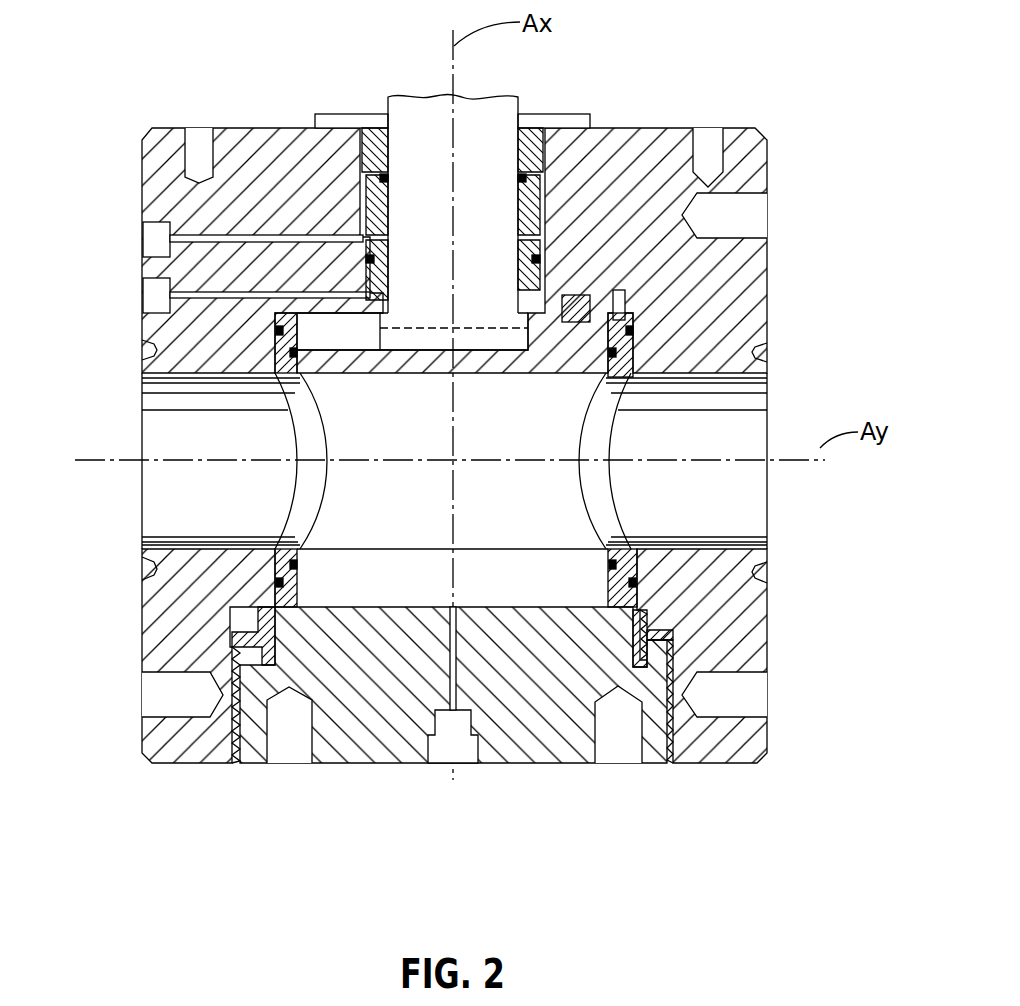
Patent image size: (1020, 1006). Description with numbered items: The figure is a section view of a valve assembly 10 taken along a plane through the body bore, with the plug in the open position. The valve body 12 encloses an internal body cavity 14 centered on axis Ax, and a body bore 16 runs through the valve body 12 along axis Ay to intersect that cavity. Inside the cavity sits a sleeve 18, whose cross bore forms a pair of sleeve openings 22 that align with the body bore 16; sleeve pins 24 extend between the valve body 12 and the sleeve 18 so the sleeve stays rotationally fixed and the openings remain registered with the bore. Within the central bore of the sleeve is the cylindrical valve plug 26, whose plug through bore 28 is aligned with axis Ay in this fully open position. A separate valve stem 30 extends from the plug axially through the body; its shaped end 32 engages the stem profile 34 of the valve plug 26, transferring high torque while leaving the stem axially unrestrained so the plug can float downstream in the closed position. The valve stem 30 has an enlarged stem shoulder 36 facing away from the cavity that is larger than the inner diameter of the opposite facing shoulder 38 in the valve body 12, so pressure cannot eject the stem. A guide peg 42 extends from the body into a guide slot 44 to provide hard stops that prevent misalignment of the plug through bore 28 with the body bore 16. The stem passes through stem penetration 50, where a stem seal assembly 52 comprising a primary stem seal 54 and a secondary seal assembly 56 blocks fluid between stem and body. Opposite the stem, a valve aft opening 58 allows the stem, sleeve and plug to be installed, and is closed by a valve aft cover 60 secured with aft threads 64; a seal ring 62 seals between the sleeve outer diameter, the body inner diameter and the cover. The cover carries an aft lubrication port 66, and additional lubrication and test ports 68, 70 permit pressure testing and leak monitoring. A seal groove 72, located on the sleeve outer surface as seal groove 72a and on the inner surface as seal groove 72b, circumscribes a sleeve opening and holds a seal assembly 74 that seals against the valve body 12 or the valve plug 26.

The valve assembly 10 is at (117, 263).
The valve body 12 is at (757, 295).
The internal body cavity 14 is at (622, 507).
The body bore 16 is at (160, 428).
The sleeve 18 is at (757, 352).
The sleeve openings 22 is at (305, 495).
The sleeve pins 24 is at (520, 263).
The valve plug 26 is at (568, 583).
The plug through bore 28 is at (550, 432).
The valve stem 30 is at (408, 207).
The shaped end 32 is at (440, 350).
The stem profile 34 is at (380, 322).
The stem shoulder 36 is at (365, 240).
The opposite facing shoulder 38 is at (395, 312).
The guide peg 42 is at (575, 318).
The guide slot 44 is at (618, 295).
The stem penetration 50 is at (543, 178).
The stem seal assembly 52 is at (337, 173).
The primary stem seal 54 is at (700, 213).
The secondary seal assembly 56 is at (528, 215).
The valve aft opening 58 is at (243, 710).
The valve aft cover 60 is at (572, 752).
The seal ring 62 is at (673, 613).
The aft threads 64 is at (678, 655).
The aft lubrication port 66 is at (447, 755).
The lubrication and test port 68 is at (152, 240).
The lubrication and test port 70 is at (155, 298).
The seal groove 72 is at (640, 580).
The seal groove 72a is at (625, 340).
The seal groove 72b is at (300, 572).
The seal assembly 74 is at (243, 585).